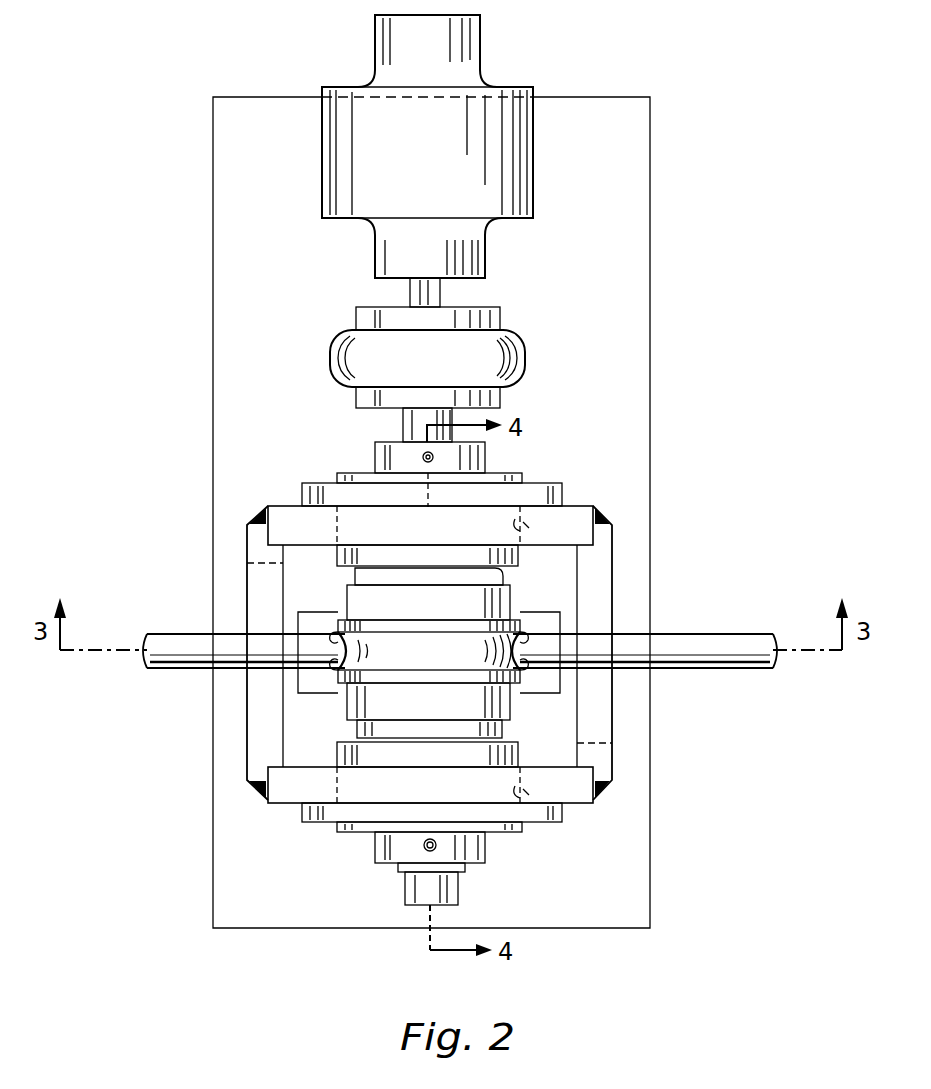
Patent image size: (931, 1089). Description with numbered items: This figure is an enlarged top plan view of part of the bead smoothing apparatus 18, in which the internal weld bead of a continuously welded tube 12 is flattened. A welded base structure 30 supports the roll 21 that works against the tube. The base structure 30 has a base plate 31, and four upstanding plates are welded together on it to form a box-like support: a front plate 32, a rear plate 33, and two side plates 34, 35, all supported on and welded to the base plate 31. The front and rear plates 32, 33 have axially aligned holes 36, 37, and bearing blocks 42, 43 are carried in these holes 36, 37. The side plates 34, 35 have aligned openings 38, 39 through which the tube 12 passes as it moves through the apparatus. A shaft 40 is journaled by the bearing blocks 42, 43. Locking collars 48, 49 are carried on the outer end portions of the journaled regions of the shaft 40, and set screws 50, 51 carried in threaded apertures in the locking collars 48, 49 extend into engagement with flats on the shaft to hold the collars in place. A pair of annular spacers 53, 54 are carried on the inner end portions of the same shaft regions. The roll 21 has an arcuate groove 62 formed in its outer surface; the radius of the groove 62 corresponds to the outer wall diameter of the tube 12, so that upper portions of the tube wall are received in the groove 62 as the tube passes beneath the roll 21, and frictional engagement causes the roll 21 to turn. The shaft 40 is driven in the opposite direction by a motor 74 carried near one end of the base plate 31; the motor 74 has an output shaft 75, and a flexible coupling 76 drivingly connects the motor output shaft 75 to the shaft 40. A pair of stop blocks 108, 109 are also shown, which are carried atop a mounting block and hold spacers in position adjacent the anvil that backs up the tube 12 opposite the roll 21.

The tube 12 is at (165, 677).
The bead smoothing apparatus 18 is at (180, 348).
The roll 21 is at (512, 605).
The base structure 30 is at (447, 601).
The base plate 31 is at (640, 212).
The front plate 32 is at (575, 793).
The rear plate 33 is at (575, 512).
The side plate 34 is at (258, 758).
The side plate 35 is at (607, 762).
The hole 36 is at (541, 792).
The hole 37 is at (541, 532).
The opening 38 is at (258, 577).
The opening 39 is at (603, 750).
The shaft 40 is at (405, 432).
The bearing block 42 is at (555, 822).
The bearing block 43 is at (555, 490).
The locking collar 48 is at (480, 848).
The locking collar 49 is at (480, 460).
The set screw 50 is at (414, 847).
The set screw 51 is at (420, 455).
The annular spacer 53 is at (500, 730).
The annular spacer 54 is at (503, 580).
The arcuate groove 62 is at (429, 666).
The motor 74 is at (525, 150).
The output shaft 75 is at (445, 292).
The flexible coupling 76 is at (520, 355).
The stop block 108 is at (535, 688).
The stop block 109 is at (311, 622).